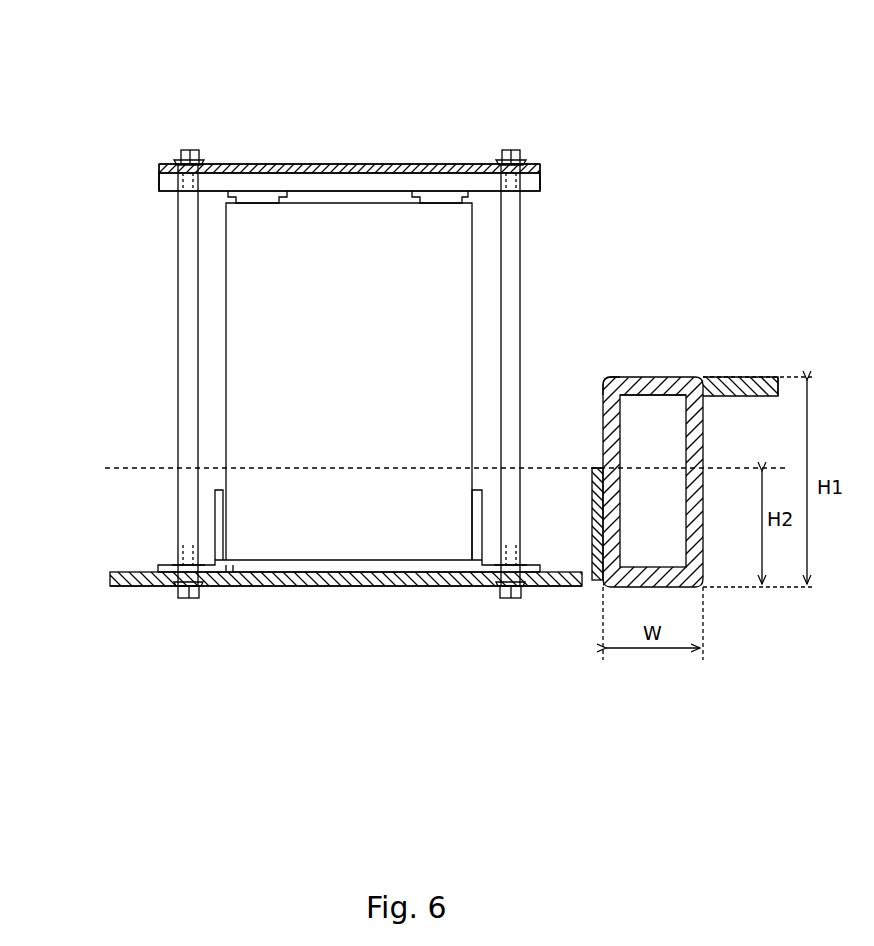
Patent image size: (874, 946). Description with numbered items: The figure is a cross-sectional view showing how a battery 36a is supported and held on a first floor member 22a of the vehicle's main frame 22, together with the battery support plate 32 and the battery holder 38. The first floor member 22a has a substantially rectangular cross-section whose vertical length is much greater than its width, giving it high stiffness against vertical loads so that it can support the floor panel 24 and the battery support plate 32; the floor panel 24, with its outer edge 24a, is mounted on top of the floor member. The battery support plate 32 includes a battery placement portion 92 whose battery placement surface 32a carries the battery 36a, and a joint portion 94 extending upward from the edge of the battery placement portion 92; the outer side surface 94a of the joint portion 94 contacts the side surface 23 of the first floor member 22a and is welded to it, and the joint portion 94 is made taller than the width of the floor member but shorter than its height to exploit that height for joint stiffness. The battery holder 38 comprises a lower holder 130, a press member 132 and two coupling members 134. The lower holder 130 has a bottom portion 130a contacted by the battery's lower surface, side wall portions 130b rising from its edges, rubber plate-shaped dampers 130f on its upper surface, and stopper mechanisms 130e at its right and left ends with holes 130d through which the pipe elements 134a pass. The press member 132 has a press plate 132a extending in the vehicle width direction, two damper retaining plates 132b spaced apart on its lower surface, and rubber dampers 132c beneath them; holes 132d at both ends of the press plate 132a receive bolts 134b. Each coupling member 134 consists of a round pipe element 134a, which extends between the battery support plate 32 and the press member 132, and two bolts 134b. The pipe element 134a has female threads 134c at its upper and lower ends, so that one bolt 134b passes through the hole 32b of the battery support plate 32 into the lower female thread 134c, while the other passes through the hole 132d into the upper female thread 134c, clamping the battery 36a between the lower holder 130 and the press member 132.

The main frame 22 is at (633, 422).
The first floor member 22a is at (655, 385).
The side surface 23 is at (604, 410).
The floor panel 24 is at (755, 341).
The flange end 24a is at (767, 378).
The battery support plate 32 is at (345, 658).
The battery placement surface 32a is at (338, 560).
The hole 32b is at (203, 586).
The battery 36a is at (253, 273).
The battery holder 38 is at (538, 156).
The battery placement portion 92 is at (232, 588).
The joint portion 94 is at (594, 450).
The outer side surface 94a is at (598, 490).
The lower holder 130 is at (322, 550).
The bottom portion 130a is at (320, 562).
The side wall portion 130b is at (221, 502).
The hole 130d is at (178, 578).
The stopper mechanism 130e is at (173, 567).
The damper 130f is at (300, 562).
The press member 132 is at (401, 127).
The press plate 132a is at (400, 190).
The damper retaining plate 132b is at (253, 191).
The damper 132c is at (274, 203).
The hole 132d is at (180, 170).
The coupling member 134 is at (390, 415).
The pipe element 134a is at (188, 327).
The bolt 134b is at (515, 150).
The female thread 134c is at (528, 208).